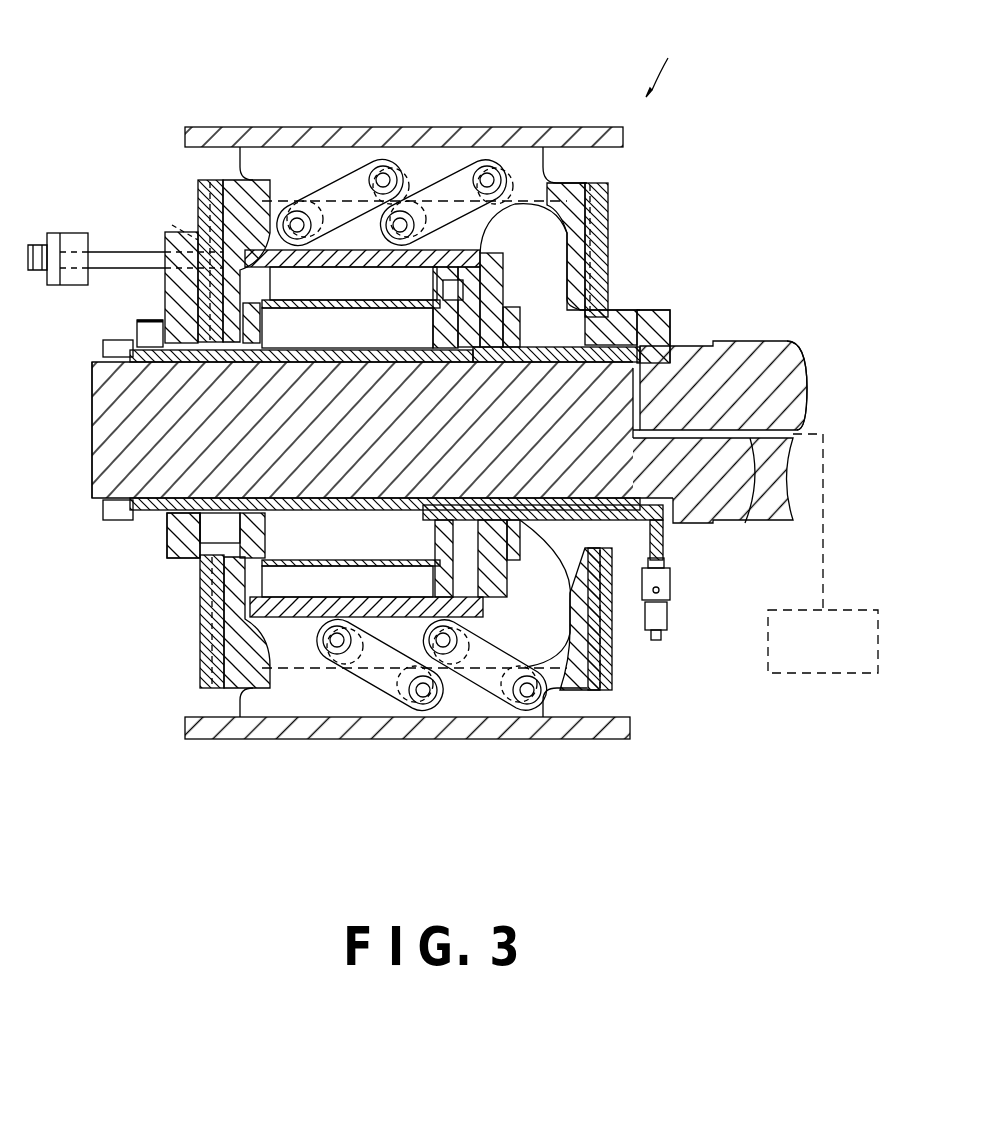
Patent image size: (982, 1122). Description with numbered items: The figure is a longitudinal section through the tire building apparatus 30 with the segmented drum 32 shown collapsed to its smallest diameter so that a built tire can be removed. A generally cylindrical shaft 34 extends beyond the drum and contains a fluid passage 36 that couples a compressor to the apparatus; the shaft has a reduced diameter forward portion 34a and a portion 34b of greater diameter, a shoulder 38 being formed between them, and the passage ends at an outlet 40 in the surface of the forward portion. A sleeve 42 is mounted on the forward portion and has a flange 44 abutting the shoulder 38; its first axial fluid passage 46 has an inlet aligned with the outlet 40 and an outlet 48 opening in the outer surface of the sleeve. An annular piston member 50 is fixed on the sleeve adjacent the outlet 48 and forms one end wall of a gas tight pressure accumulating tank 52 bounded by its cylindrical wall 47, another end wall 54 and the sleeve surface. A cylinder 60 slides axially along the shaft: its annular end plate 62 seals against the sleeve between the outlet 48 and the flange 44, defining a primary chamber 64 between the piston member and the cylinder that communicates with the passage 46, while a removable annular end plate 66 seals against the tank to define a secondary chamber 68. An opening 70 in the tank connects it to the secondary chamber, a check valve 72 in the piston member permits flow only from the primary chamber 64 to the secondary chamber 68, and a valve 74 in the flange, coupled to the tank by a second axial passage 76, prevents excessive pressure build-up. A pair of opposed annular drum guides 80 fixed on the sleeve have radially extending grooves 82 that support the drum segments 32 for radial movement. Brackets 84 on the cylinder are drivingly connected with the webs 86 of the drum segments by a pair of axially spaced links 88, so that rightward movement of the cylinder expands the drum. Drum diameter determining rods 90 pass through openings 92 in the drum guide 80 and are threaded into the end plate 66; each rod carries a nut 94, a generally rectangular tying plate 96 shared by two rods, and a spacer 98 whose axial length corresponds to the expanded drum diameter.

The tire building apparatus 30 is at (664, 52).
The segmented drum 32 is at (212, 127).
The shaft 34 is at (107, 433).
The forward portion 34a is at (107, 480).
The portion of greater diameter 34b is at (700, 343).
The fluid passage 36 is at (746, 523).
The shoulder 38 is at (672, 330).
The outlet 40 is at (645, 388).
The sleeve 42 is at (167, 553).
The flange 44 is at (652, 315).
The first axial fluid passage 46 is at (535, 352).
The cylindrical wall 47 is at (331, 237).
The outlet 48 is at (485, 295).
The annular piston member 50 is at (508, 224).
The pressure accumulating tank 52 is at (293, 344).
The end wall 54 is at (118, 364).
The cylinder 60 is at (362, 257).
The annular end plate 62 is at (578, 255).
The primary chamber 64 is at (618, 308).
The annular end plate 66 is at (198, 305).
The secondary chamber 68 is at (363, 304).
The opening 70 is at (420, 313).
The check valve 72 is at (600, 183).
The valve 74 is at (668, 578).
The second axial passage 76 is at (532, 513).
The drum guide 80 is at (197, 200).
The radially extending grooves 82 is at (165, 318).
The brackets 84 is at (528, 180).
The webs 86 is at (422, 165).
The links 88 is at (297, 200).
The drum diameter determining rods 90 is at (120, 252).
The openings 92 is at (172, 225).
The nut 94 is at (37, 248).
The tying plate 96 is at (50, 233).
The spacer 98 is at (78, 233).